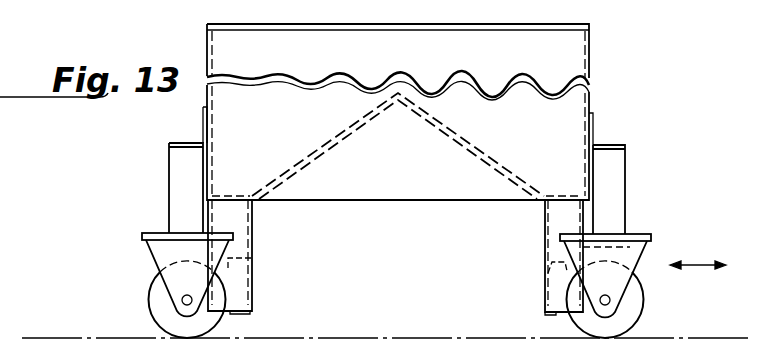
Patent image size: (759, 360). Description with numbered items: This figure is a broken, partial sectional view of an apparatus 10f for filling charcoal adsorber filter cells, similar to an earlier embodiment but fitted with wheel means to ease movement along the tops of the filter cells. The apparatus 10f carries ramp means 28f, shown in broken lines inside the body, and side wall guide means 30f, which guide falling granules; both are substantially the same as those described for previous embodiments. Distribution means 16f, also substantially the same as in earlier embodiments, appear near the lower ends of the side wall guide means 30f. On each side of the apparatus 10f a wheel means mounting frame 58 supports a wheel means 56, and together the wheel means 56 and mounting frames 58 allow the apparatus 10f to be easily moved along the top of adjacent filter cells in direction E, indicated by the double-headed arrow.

The apparatus 10f is at (590, 60).
The ramp means 28f is at (480, 148).
The wheel means mounting frame 58 is at (626, 175).
The side wall guide means 30f is at (213, 212).
The distribution means 16f is at (233, 270).
The wheel means 56 is at (162, 303).
The direction E is at (700, 266).